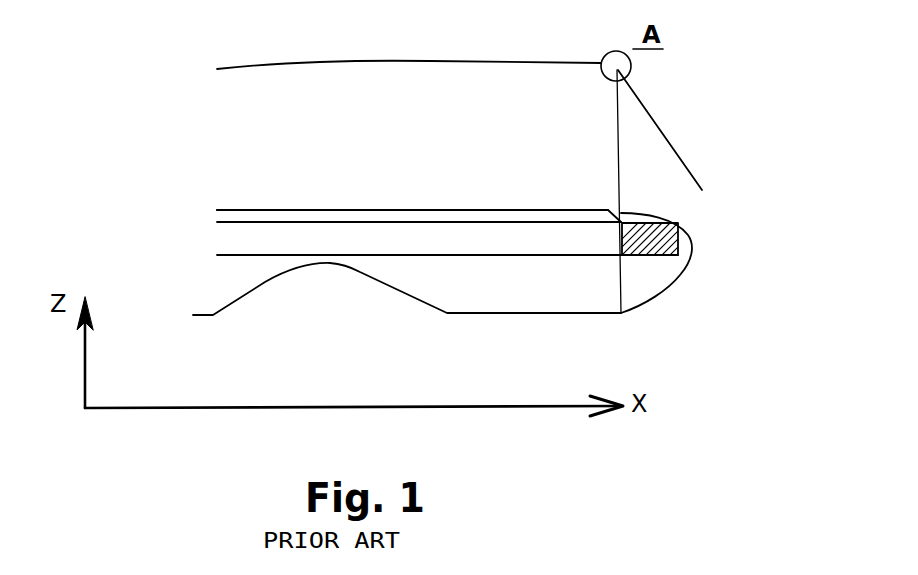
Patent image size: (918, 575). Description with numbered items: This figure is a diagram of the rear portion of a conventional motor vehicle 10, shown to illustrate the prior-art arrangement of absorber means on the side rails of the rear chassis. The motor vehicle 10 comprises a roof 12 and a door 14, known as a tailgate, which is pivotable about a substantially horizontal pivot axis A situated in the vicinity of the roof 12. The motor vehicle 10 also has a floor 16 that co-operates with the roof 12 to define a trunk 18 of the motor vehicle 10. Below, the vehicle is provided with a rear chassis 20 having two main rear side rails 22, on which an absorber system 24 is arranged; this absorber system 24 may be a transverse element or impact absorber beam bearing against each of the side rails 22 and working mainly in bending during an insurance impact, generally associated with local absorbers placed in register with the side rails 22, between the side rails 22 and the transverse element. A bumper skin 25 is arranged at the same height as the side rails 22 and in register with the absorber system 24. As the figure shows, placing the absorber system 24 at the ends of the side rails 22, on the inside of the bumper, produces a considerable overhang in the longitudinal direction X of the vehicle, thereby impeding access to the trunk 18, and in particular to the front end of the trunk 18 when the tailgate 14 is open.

The motor vehicle 10 is at (153, 94).
The roof 12 is at (430, 62).
The door (tailgate) 14 is at (667, 135).
The floor 16 is at (507, 210).
The trunk 18 is at (401, 129).
The rear chassis 20 is at (184, 212).
The main rear side rails 22 is at (242, 247).
The absorber system 24 is at (655, 247).
The bumper skin 25 is at (688, 230).